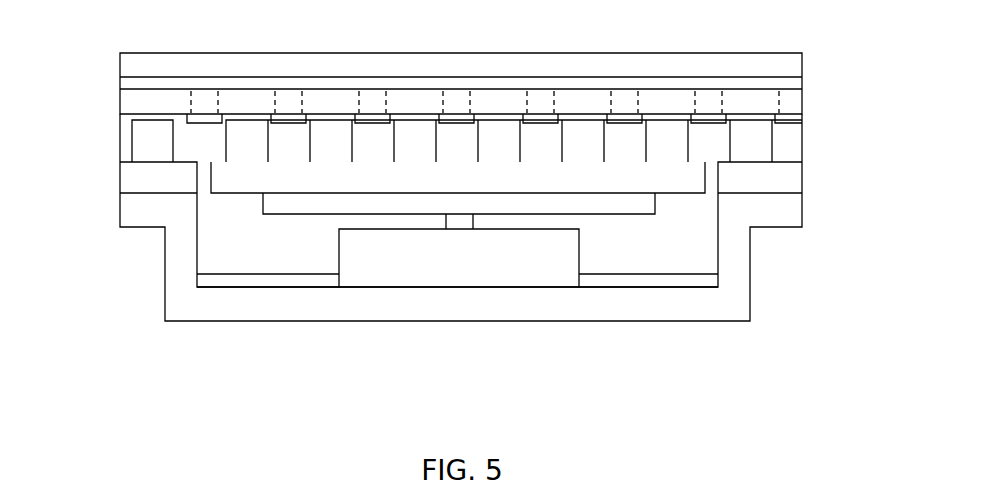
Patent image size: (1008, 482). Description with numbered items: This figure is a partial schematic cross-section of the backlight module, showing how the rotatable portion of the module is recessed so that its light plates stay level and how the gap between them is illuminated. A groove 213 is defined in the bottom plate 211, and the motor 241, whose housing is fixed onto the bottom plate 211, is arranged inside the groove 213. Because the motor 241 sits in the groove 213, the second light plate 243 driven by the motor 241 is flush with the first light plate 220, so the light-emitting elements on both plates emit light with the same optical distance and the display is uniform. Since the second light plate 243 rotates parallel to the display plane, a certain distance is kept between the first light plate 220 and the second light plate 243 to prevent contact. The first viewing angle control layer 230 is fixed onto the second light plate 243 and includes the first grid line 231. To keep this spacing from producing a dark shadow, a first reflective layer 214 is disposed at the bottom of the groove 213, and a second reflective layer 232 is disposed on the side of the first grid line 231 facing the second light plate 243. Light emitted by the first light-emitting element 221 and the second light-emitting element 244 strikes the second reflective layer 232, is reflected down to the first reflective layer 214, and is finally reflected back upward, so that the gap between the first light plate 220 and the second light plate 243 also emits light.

The bottom plate 211 is at (740, 258).
The groove 213 is at (629, 253).
The first reflective layer 214 is at (238, 278).
The first light plate 220 is at (775, 178).
The first light-emitting element 221 is at (158, 148).
The first viewing angle control layer 230 is at (760, 104).
The first grid line 231 is at (202, 90).
The second reflective layer 232 is at (206, 124).
The motor 241 is at (503, 275).
The second light plate 243 is at (685, 187).
The second light-emitting element 244 is at (254, 133).